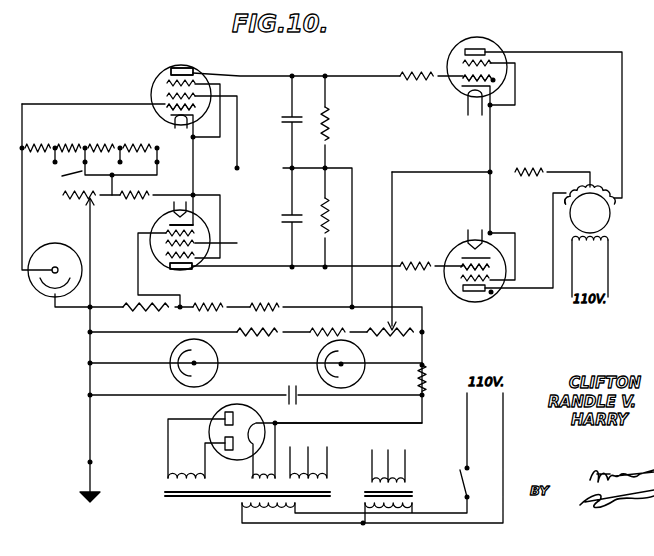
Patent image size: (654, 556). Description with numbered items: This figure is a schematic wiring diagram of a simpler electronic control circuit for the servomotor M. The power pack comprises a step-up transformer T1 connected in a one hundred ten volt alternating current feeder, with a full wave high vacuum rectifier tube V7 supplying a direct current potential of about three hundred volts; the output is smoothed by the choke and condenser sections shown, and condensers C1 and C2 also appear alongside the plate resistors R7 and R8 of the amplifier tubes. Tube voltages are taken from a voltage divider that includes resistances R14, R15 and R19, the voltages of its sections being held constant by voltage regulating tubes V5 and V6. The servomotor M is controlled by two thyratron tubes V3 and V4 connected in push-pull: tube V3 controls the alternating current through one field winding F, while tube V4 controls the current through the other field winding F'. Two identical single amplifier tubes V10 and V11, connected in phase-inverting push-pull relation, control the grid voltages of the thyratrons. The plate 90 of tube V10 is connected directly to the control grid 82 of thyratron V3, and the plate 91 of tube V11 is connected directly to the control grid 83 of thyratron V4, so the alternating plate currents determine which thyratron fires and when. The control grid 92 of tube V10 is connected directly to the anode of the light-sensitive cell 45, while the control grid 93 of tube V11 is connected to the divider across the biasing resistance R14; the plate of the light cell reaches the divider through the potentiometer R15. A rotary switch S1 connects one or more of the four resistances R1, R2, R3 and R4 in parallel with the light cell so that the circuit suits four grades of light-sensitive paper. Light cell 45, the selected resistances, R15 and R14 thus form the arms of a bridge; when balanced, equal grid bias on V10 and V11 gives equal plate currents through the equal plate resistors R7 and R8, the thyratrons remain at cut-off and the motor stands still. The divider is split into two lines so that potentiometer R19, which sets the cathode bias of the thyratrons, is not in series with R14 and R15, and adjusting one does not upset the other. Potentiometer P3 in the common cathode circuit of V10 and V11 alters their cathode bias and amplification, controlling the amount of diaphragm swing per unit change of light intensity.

The amplifier tube V10 is at (168, 66).
The plate of tube V10 90 is at (194, 70).
The control grid of tube V10 92 is at (167, 103).
The resistance R1 is at (42, 146).
The resistance R2 is at (70, 146).
The resistance R3 is at (103, 146).
The resistance R4 is at (137, 146).
The rotary switch S1 is at (62, 176).
The potentiometer P3 is at (78, 203).
The amplifier tube V11 is at (159, 218).
The control grid of tube V11 93 is at (191, 226).
The plate of tube V11 91 is at (196, 268).
The light-sensitive cell 45 is at (50, 298).
The biasing resistance R14 is at (132, 310).
The potentiometer R15 is at (199, 311).
The potentiometer R19 is at (384, 336).
The voltage regulating tube V5 is at (217, 372).
The voltage regulating tube V6 is at (362, 375).
The full wave high vacuum rectifier tube V7 is at (212, 412).
The step-up transformer T1 is at (247, 486).
The capacitor C1 is at (290, 113).
The capacitor C2 is at (289, 216).
The plate resistor R7 is at (332, 133).
The plate resistor R8 is at (326, 236).
The thyratron tube V3 is at (482, 38).
The control grid of thyratron V3 82 is at (465, 79).
The control grid of thyratron V4 83 is at (464, 266).
The thyratron tube V4 is at (493, 294).
The servomotor M is at (611, 215).
The field winding F is at (590, 182).
The field winding F' is at (556, 190).